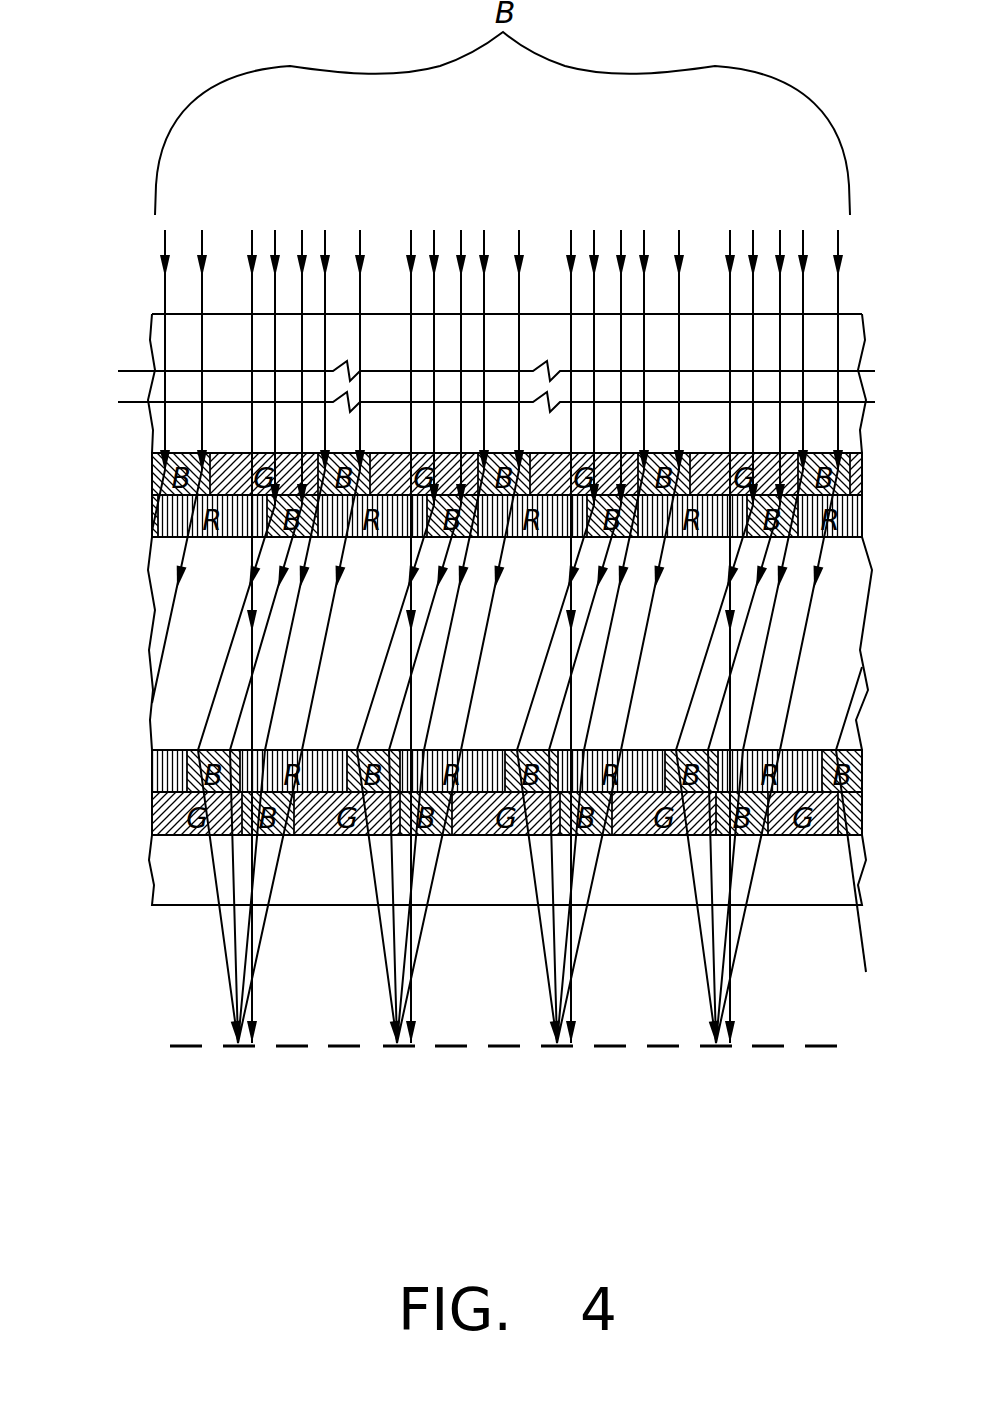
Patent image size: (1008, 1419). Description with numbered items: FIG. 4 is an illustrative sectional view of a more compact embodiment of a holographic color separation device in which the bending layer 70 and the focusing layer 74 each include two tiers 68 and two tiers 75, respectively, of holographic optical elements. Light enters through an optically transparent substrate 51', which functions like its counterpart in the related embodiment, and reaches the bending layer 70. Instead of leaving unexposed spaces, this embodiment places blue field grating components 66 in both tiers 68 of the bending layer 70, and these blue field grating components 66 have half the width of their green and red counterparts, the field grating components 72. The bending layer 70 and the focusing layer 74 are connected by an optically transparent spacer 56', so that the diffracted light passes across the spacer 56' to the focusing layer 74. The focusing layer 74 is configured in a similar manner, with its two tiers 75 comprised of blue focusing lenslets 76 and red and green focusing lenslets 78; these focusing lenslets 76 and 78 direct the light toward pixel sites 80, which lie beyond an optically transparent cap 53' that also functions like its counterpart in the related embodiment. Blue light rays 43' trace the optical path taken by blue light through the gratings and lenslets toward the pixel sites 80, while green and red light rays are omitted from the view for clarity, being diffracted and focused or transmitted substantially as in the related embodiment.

The blue light rays 43' is at (474, 633).
The optically transparent substrate 51' is at (461, 382).
The bending layer 70 is at (143, 453).
The tiers 68 is at (150, 516).
The blue field grating components 66 is at (200, 455).
The field grating components 72 is at (724, 454).
The optically transparent spacer 56' is at (471, 610).
The focusing layer 74 is at (143, 750).
The tiers 75 is at (150, 814).
The blue focusing lenslets 76 is at (290, 796).
The red and green focusing lenslets 78 is at (470, 750).
The optically transparent cap 53' is at (465, 897).
The pixel sites 80 is at (190, 1085).